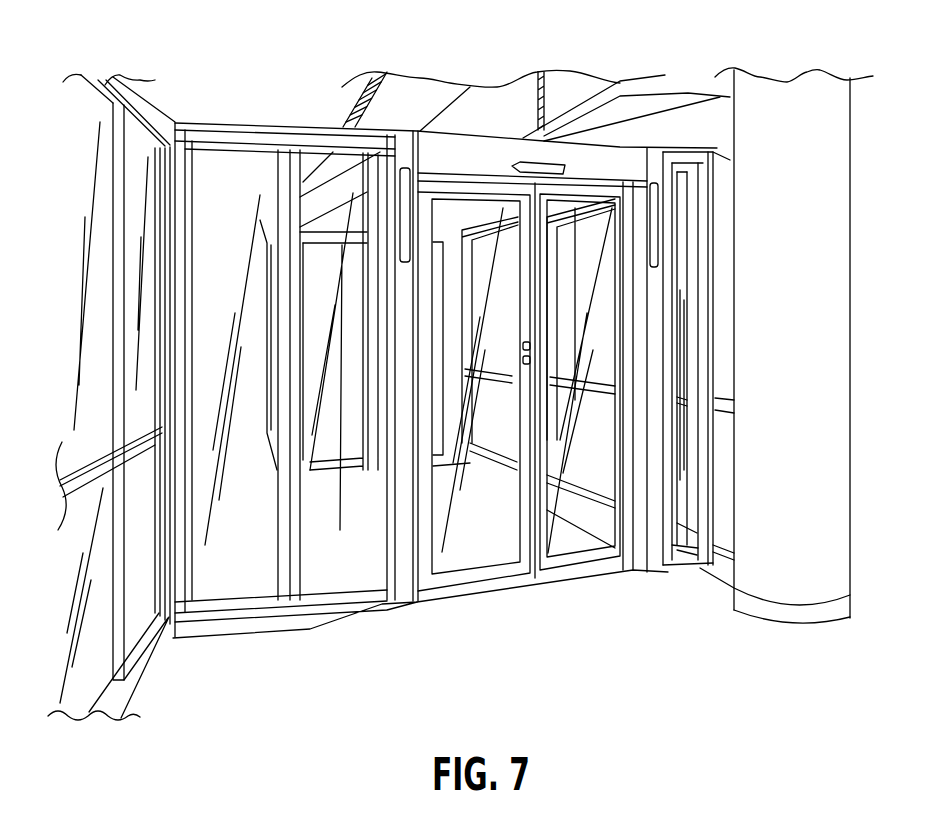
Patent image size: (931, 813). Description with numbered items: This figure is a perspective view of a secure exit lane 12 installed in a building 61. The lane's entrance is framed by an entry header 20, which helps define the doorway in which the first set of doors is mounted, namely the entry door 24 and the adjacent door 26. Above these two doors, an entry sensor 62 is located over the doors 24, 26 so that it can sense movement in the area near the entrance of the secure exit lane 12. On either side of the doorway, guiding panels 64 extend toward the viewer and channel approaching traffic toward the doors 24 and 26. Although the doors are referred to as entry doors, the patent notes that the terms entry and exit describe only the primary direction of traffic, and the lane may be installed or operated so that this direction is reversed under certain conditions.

The secure exit lane 12 is at (414, 85).
The entry header 20 is at (460, 157).
The entry door 24 is at (486, 544).
The door 26 is at (614, 476).
The building 61 is at (270, 111).
The entry sensor 62 is at (530, 167).
The guiding panels 64 is at (317, 557).